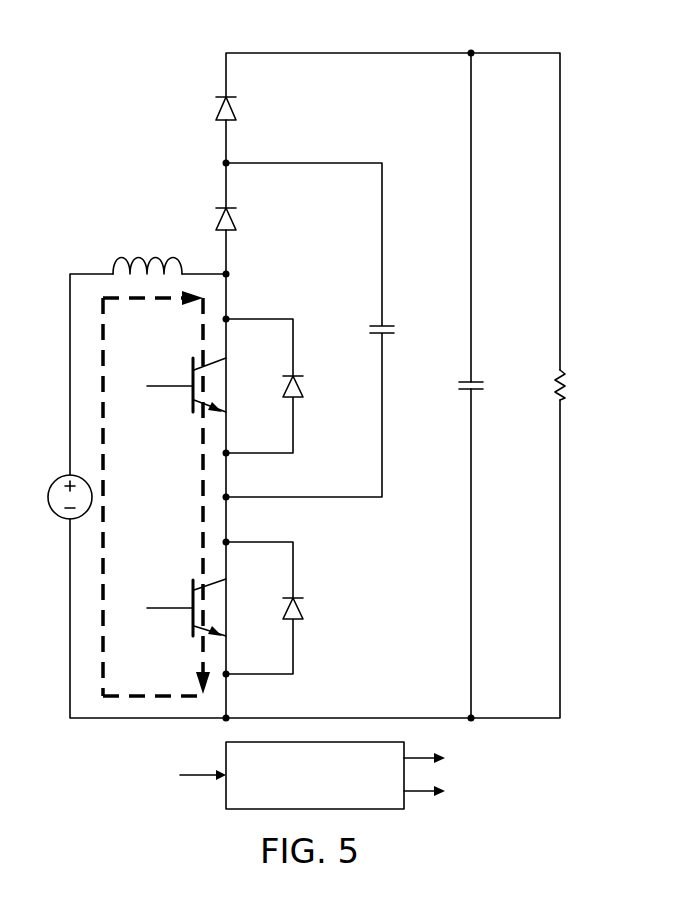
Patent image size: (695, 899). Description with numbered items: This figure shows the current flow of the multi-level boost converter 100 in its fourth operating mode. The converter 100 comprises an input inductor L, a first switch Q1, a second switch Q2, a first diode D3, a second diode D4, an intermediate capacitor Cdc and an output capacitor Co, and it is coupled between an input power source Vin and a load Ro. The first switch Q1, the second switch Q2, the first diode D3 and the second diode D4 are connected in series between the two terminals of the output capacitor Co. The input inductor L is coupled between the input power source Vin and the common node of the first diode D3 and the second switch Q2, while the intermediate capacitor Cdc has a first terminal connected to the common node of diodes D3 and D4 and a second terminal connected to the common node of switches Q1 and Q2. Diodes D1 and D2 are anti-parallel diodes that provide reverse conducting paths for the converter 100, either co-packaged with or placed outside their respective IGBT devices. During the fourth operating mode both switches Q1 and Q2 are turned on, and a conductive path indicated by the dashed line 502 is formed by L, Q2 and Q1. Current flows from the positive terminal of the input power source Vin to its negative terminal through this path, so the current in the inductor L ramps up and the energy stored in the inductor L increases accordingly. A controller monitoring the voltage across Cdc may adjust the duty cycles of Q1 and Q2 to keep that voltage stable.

The multi-level boost converter 100 is at (100, 70).
The dashed line 502 is at (104, 510).
The input inductor L is at (147, 253).
The anti-parallel diode D1 is at (281, 608).
The anti-parallel diode D2 is at (281, 386).
The first diode D3 is at (242, 220).
The second diode D4 is at (242, 109).
The first switch Q1 is at (197, 607).
The second switch Q2 is at (197, 385).
The intermediate capacitor Cdc is at (330, 317).
The output capacitor Co is at (486, 388).
The load Ro is at (574, 385).
The input power source Vin is at (51, 497).